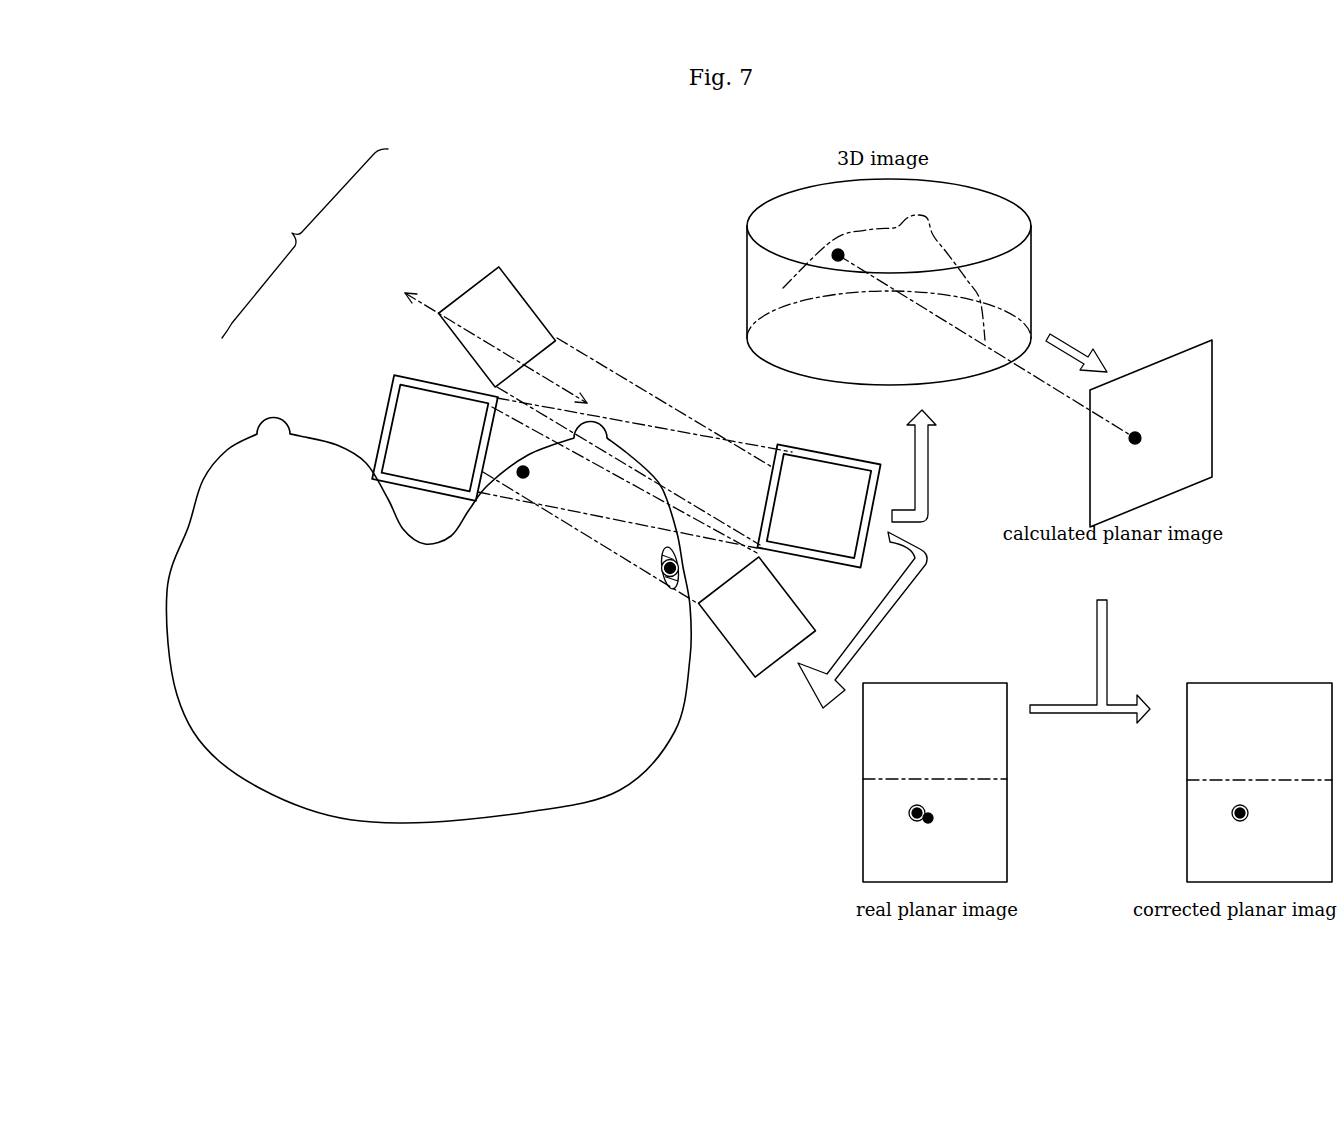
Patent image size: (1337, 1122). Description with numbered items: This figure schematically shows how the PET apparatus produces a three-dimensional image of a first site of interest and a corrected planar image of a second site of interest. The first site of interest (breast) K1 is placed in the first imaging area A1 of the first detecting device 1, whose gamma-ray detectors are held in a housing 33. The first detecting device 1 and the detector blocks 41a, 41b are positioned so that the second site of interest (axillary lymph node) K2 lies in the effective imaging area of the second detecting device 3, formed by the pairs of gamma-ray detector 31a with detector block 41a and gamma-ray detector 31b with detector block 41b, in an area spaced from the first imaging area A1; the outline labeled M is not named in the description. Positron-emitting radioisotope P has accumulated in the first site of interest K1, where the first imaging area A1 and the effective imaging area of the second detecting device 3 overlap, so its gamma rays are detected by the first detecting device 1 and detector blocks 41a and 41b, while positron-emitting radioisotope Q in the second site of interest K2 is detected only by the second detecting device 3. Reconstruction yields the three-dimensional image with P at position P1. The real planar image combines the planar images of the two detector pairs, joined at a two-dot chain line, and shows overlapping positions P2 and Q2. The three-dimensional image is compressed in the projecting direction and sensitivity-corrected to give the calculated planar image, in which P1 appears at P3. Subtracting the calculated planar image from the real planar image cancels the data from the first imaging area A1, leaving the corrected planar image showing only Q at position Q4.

The first detecting device 1 is at (316, 382).
The second detecting device 3 is at (404, 276).
The housing 33 is at (391, 378).
The gamma-ray detector 31a is at (836, 514).
The gamma-ray detector 31b is at (461, 442).
The detector block 41a is at (522, 296).
The detector block 41b is at (757, 617).
The subject (head cross-section) M is at (667, 742).
The positron-emitting radioisotope P is at (520, 469).
The positron-emitting radioisotope Q is at (663, 585).
The first site of interest K1 is at (554, 498).
The second site of interest K2 is at (658, 552).
The first imaging area A1 is at (731, 456).
The position corresponding to positron-emitting radioisotope P in the 3D image P1 is at (834, 249).
The position corresponding to point P1 in the calculated planar image P3 is at (1137, 446).
The position corresponding to positron-emitting radioisotope P in the real planar im P2 is at (935, 817).
The position corresponding to positron-emitting radioisotope Q in the real planar im Q2 is at (913, 822).
The position corresponding to positron-emitting radioisotope Q in the corrected plan Q4 is at (1237, 822).